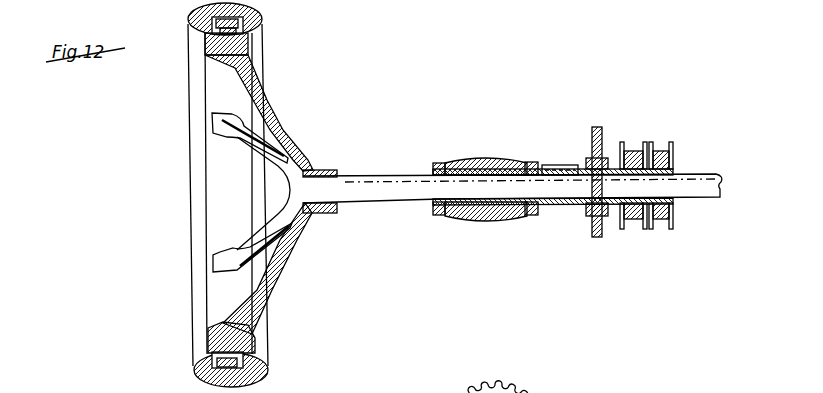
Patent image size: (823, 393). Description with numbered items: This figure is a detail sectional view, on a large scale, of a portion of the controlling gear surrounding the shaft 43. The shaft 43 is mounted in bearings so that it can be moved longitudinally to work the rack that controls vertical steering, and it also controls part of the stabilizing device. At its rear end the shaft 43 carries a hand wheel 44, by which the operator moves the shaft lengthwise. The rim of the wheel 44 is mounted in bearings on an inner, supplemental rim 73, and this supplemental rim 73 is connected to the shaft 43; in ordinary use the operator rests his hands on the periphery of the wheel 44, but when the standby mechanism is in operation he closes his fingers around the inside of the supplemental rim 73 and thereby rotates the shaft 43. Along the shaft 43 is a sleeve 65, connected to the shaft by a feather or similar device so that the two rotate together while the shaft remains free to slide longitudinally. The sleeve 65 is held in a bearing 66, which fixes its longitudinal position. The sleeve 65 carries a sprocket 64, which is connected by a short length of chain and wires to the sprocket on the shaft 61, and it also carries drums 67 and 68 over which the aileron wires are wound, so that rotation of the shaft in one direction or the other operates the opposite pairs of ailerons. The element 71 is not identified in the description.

The hand wheel 44 is at (200, 336).
The lower hub 71 is at (258, 340).
The supplemental rim 73 is at (285, 341).
The shaft 43 is at (385, 199).
The sleeve 65 is at (558, 206).
The bearing 66 is at (485, 179).
The sprocket 64 is at (602, 134).
The drum 67 is at (633, 196).
The drum 68 is at (661, 195).
The shaft 61 is at (520, 391).